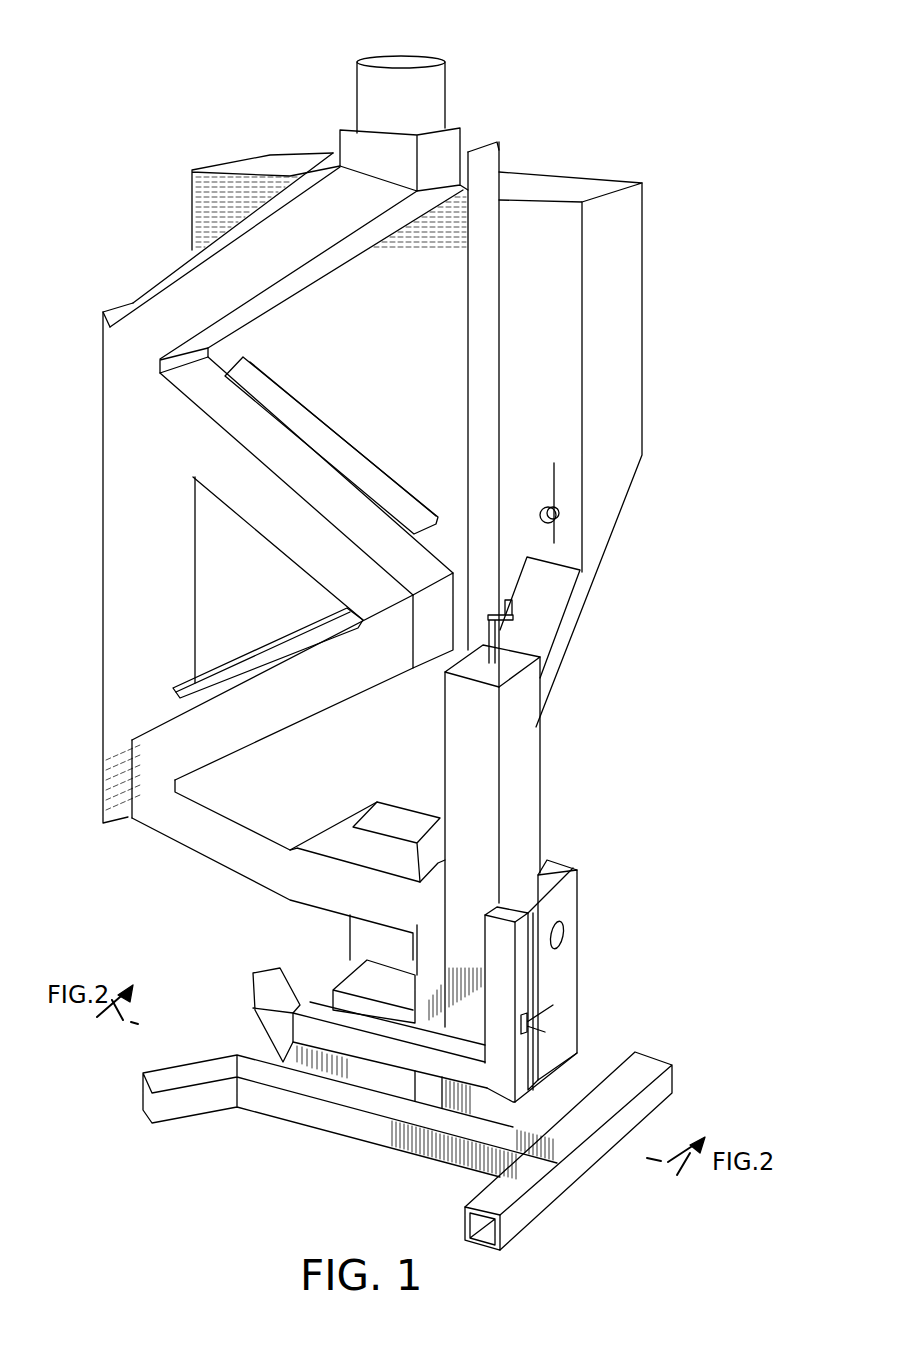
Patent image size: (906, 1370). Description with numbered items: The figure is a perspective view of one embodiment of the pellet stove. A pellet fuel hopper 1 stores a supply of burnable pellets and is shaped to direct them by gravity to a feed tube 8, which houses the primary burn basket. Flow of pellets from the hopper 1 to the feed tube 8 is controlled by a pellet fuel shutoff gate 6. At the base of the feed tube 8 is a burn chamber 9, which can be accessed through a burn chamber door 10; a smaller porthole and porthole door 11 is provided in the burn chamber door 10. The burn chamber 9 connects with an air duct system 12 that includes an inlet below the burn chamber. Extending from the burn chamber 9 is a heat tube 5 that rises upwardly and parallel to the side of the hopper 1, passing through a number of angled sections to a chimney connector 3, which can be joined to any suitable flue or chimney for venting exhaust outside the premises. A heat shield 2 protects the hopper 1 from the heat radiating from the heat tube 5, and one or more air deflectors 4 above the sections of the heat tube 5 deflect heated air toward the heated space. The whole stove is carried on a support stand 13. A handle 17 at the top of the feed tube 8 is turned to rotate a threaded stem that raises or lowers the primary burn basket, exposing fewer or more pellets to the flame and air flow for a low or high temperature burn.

The pellet fuel hopper 1 is at (625, 282).
The heat shield 2 is at (490, 162).
The chimney connector 3 is at (447, 87).
The air deflector 4 is at (320, 408).
The heat tube 5 is at (313, 700).
The pellet fuel shutoff gate 6 is at (560, 515).
The feed tube 8 is at (518, 792).
The burn chamber 9 is at (547, 887).
The burn chamber door 10 is at (563, 985).
The porthole door 11 is at (562, 925).
The air duct system 12 is at (302, 1030).
The support stand 13 is at (372, 1132).
The handle 17 is at (513, 607).